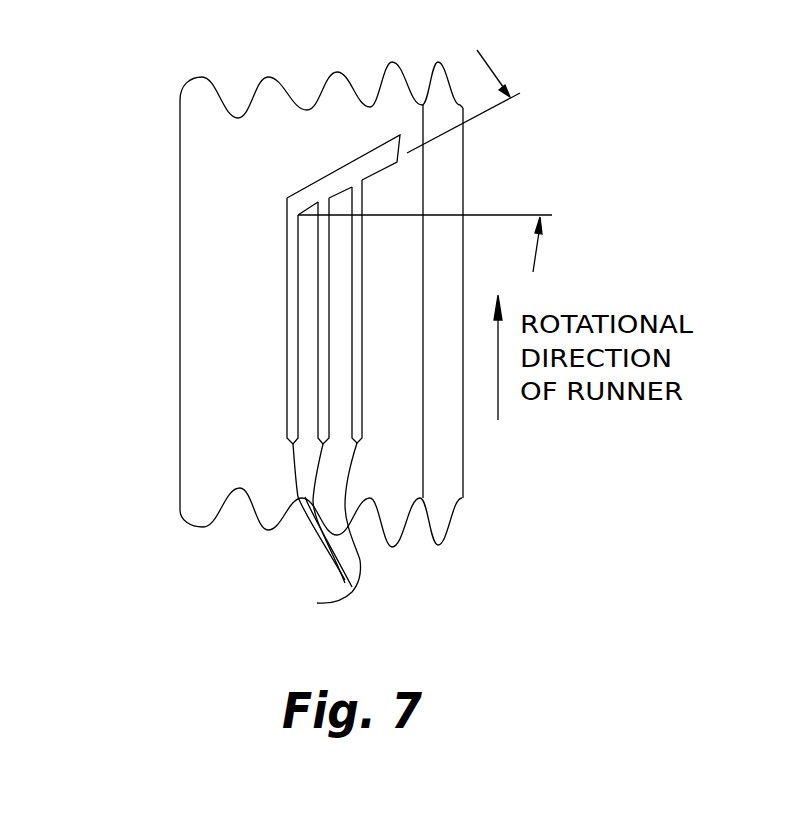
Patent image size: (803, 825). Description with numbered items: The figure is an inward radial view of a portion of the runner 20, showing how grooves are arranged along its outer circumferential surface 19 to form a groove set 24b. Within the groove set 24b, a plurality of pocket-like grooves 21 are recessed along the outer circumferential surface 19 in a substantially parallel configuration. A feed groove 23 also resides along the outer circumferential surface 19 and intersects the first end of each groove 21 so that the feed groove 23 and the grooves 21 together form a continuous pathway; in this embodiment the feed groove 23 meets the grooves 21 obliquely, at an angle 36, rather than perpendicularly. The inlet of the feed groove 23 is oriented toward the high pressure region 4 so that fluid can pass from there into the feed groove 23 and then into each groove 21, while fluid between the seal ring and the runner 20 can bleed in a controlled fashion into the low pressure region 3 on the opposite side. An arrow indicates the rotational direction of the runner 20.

The low pressure region 3 is at (94, 157).
The high pressure region 4 is at (648, 172).
The outer circumferential surface 19 is at (395, 490).
The runner 20 is at (187, 515).
The groove 21 is at (320, 588).
The feed groove 23 is at (332, 185).
The groove set 24b is at (287, 317).
The angle 36 is at (425, 161).